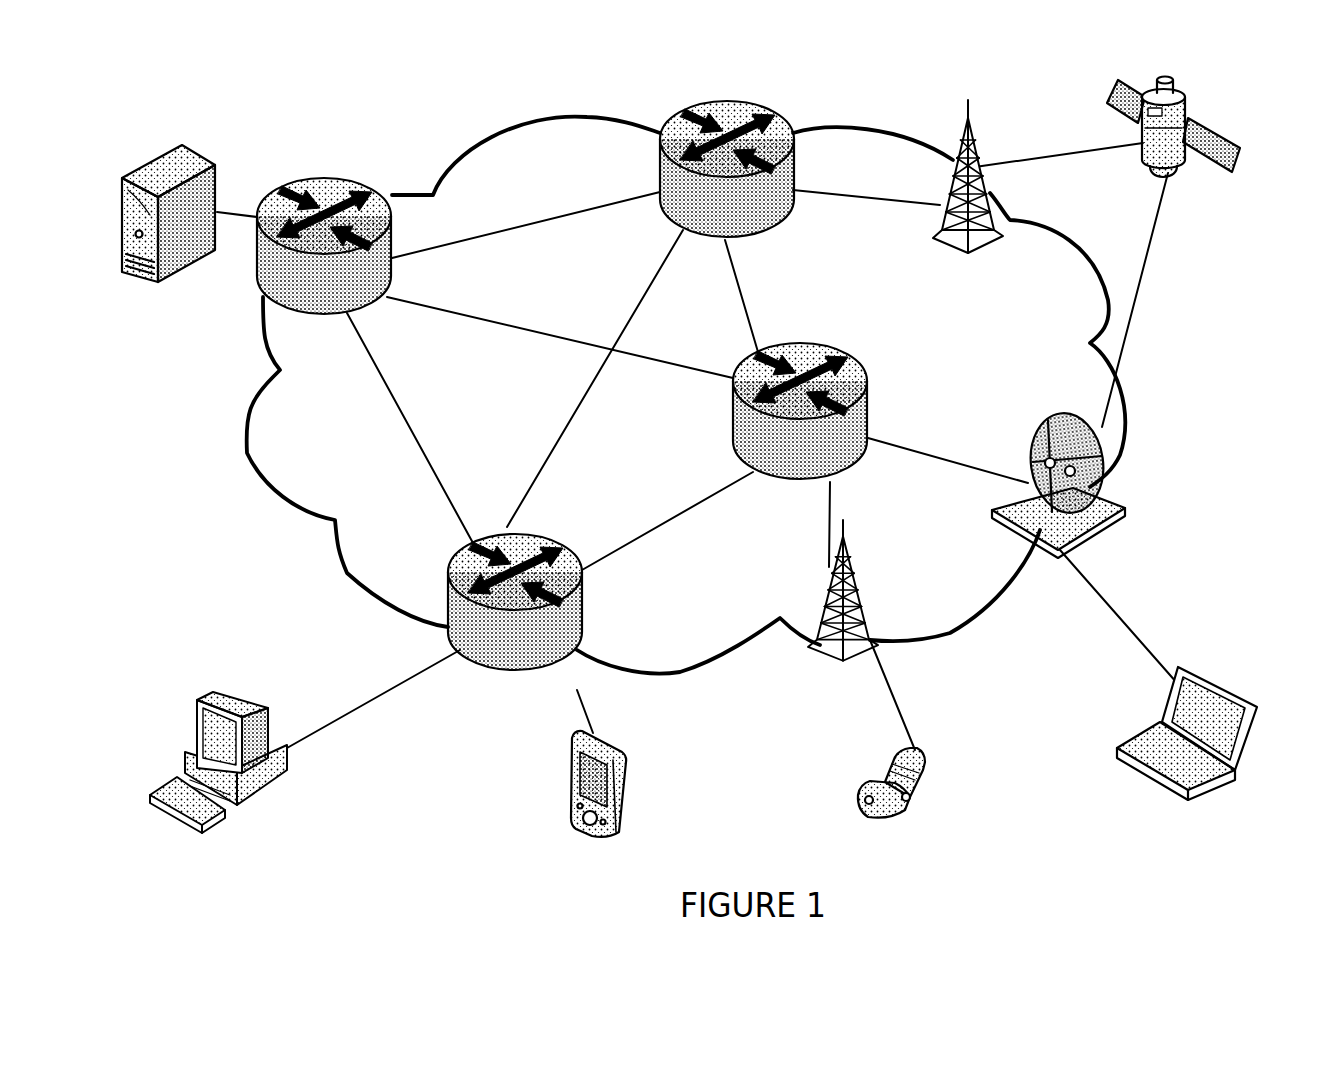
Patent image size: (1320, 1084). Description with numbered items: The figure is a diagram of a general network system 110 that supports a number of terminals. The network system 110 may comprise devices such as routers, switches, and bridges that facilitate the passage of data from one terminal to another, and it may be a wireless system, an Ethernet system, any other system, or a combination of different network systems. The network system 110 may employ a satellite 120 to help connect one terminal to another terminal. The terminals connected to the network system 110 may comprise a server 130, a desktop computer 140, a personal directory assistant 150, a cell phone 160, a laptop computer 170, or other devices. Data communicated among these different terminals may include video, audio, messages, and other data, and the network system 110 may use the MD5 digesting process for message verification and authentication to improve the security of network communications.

The network system 110 is at (507, 132).
The satellite 120 is at (1183, 167).
The server 130 is at (200, 153).
The desktop computer 140 is at (237, 695).
The personal directory assistant 150 is at (627, 800).
The cell phone 160 is at (908, 798).
The laptop computer 170 is at (1207, 677).